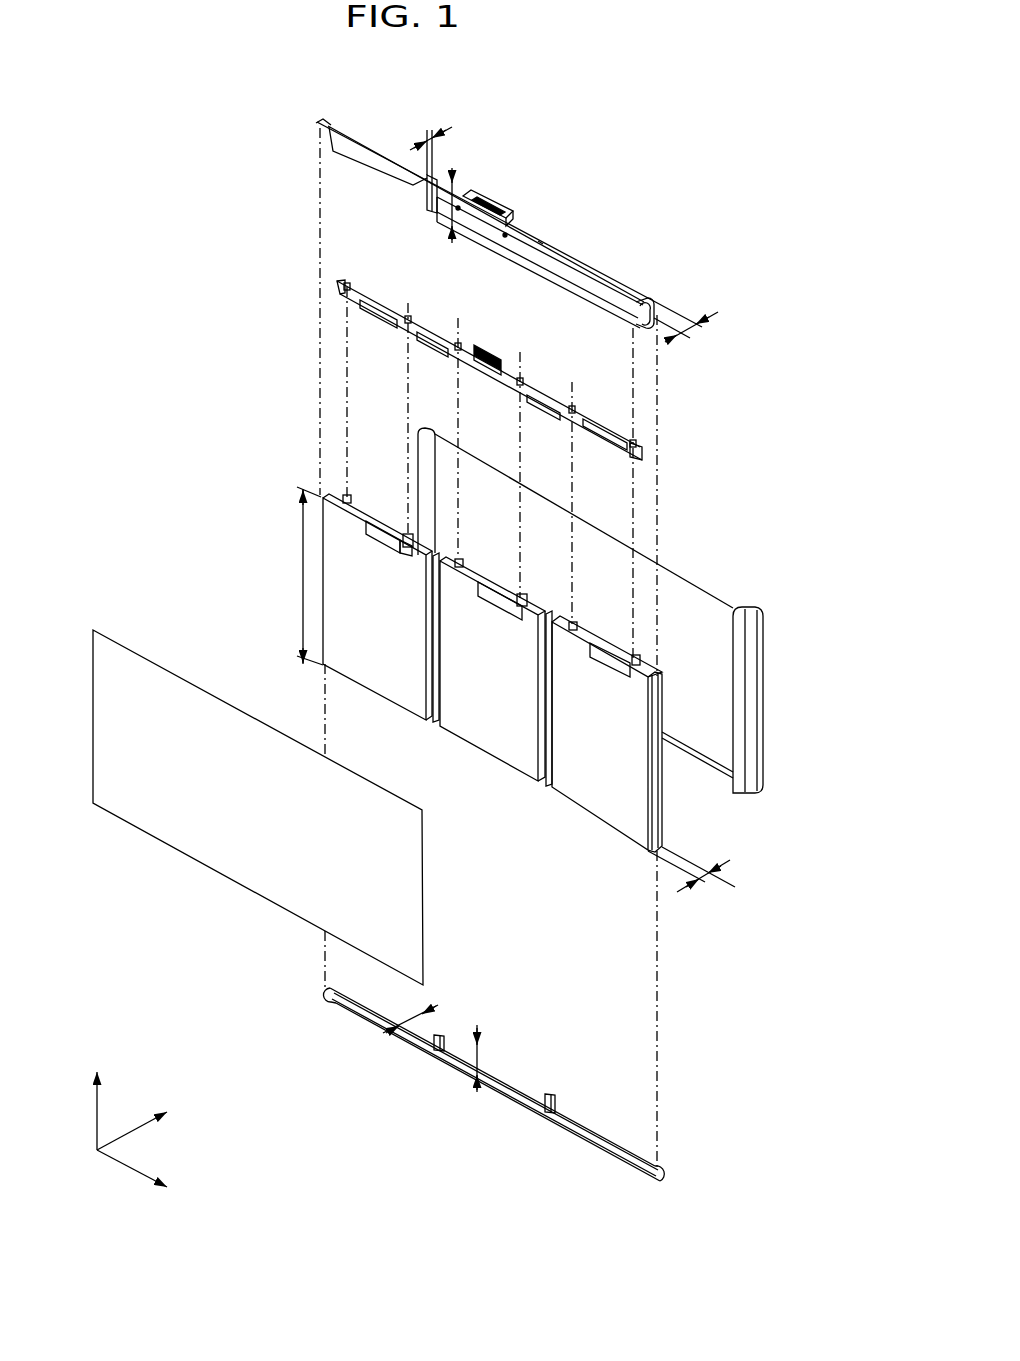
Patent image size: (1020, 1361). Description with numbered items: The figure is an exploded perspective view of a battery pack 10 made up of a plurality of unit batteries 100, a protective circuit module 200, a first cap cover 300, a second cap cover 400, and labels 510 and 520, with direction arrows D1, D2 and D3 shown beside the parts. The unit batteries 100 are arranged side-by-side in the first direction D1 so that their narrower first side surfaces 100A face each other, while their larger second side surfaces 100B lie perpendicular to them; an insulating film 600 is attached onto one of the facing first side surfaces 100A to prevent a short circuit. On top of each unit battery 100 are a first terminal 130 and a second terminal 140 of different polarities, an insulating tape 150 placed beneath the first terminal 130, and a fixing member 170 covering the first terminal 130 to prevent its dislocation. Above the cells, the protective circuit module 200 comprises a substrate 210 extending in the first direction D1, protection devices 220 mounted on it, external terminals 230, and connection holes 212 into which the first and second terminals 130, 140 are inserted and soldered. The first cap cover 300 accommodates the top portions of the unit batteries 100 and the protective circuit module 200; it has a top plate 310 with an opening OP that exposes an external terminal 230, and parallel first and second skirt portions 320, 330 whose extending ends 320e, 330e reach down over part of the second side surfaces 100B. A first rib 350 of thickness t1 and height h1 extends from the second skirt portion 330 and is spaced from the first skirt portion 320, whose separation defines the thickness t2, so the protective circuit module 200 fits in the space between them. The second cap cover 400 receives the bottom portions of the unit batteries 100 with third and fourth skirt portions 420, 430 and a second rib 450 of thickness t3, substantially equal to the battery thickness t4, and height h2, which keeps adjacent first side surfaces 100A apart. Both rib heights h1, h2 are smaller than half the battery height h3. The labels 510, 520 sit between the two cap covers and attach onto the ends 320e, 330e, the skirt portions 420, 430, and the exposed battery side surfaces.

The battery pack 10 is at (632, 153).
The unit battery 100 is at (515, 677).
The first side surface 100A is at (661, 797).
The second side surface 100B is at (362, 677).
The first terminal 130 is at (406, 534).
The second terminal 140 is at (341, 496).
The insulating tape 150 is at (408, 556).
The fixing member 170 is at (368, 535).
The protective circuit module 200 is at (533, 364).
The substrate 210 is at (641, 453).
The connection hole 212 is at (347, 286).
The protection device 220 is at (378, 316).
The external terminal 230 is at (493, 345).
The first cap cover 300 is at (519, 218).
The top plate 310 is at (592, 268).
The first skirt portion 320 is at (568, 270).
The extending end of first skirt portion 320e is at (610, 310).
The second skirt portion 330 is at (366, 150).
The extending end of second skirt portion 330e is at (370, 168).
The first rib 350 is at (426, 190).
The second cap cover 400 is at (545, 1101).
The third skirt portion 420 is at (603, 1151).
The fourth skirt portion 430 is at (608, 1138).
The second rib 450 is at (552, 1094).
The label 510 is at (122, 652).
The label 520 is at (732, 605).
The insulating film 600 is at (448, 684).
The opening OP is at (488, 204).
The thickness of first rib t1 is at (431, 144).
The thickness of first cap cover t2 is at (684, 325).
The thickness of second rib t3 is at (410, 1010).
The thickness of unit battery t4 is at (712, 875).
The height of first rib h1 is at (456, 222).
The height of second rib h2 is at (482, 1057).
The height of unit battery h3 is at (297, 576).
The first direction D1 is at (146, 1181).
The second direction D2 is at (147, 1118).
The third direction D3 is at (98, 1094).